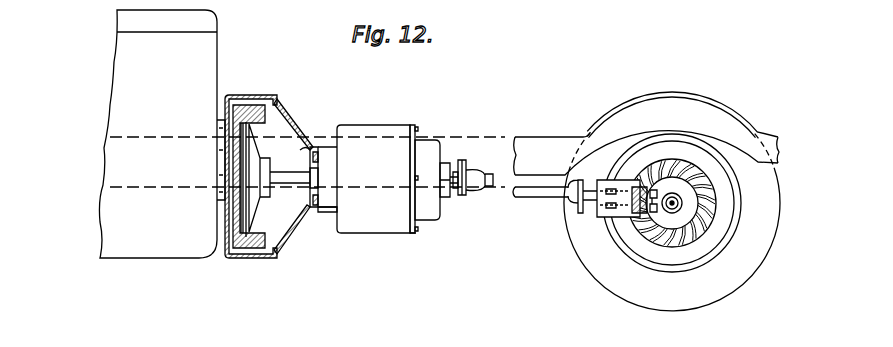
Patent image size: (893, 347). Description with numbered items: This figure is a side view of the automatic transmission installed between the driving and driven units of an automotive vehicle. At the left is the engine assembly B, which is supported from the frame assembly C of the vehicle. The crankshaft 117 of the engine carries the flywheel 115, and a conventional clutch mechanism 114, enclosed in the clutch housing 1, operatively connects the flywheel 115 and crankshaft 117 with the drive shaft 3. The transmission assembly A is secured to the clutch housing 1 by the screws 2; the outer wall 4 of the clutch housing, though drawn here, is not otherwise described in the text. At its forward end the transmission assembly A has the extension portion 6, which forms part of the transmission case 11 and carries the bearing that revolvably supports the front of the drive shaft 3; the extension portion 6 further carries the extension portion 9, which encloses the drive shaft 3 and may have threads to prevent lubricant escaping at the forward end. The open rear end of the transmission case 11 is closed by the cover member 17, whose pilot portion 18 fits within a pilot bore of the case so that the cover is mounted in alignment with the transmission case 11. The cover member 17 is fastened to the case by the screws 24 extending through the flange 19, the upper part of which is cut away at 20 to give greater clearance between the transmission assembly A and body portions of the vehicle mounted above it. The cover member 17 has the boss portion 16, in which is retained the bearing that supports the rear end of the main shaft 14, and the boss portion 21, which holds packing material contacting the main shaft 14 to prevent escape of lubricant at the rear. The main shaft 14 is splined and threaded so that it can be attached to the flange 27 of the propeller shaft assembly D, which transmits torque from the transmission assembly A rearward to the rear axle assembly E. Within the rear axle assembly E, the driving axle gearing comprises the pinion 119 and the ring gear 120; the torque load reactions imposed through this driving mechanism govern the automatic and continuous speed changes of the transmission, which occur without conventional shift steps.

The engine assembly B is at (115, 52).
The housing casing 4 is at (229, 95).
The flywheel 115 is at (249, 250).
The crankshaft 117 is at (228, 205).
The clutch mechanism 114 is at (238, 254).
The drive shaft 3 is at (298, 188).
The clutch housing 1 is at (283, 111).
The screws 2 is at (277, 96).
The extension portion 9 is at (314, 157).
The transmission case 11 is at (337, 125).
The extension portion 6 is at (333, 213).
The transmission assembly A is at (377, 125).
The pilot portion 18 is at (416, 138).
The cut away 20 is at (414, 127).
The screws 24 is at (414, 223).
The flange 19 is at (410, 233).
The cover member 17 is at (416, 142).
The main shaft 14 is at (452, 193).
The boss portion 16 is at (445, 198).
The boss portion 21 is at (452, 168).
The flange 27 is at (464, 162).
The propeller shaft assembly D is at (486, 187).
The frame assembly C is at (534, 137).
The ring gear 120 is at (668, 244).
The pinion 119 is at (643, 213).
The rear axle assembly E is at (645, 238).